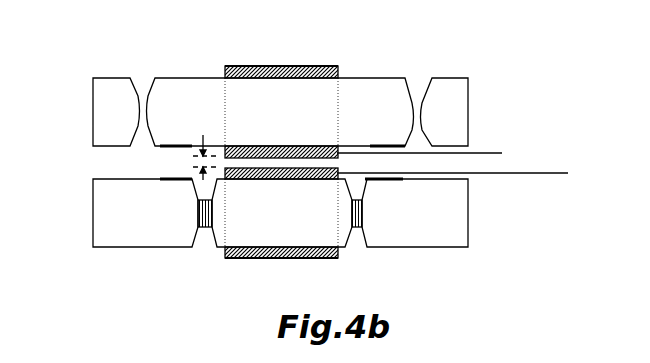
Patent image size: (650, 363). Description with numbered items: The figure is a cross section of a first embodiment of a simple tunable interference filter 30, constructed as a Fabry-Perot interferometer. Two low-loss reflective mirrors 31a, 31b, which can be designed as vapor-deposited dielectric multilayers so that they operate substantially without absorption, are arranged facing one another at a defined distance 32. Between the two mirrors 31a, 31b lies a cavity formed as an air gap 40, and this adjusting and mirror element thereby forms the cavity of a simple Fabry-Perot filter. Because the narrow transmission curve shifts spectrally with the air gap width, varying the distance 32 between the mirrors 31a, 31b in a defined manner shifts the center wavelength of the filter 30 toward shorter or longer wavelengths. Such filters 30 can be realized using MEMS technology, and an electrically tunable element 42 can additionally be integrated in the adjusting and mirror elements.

The tunable interference filter 30 is at (336, 153).
The reflective mirror 31a is at (451, 155).
The reflective mirror 31b is at (486, 178).
The distance 32 is at (200, 176).
The air gap 40 is at (235, 158).
The electrically tunable element 42 is at (180, 147).